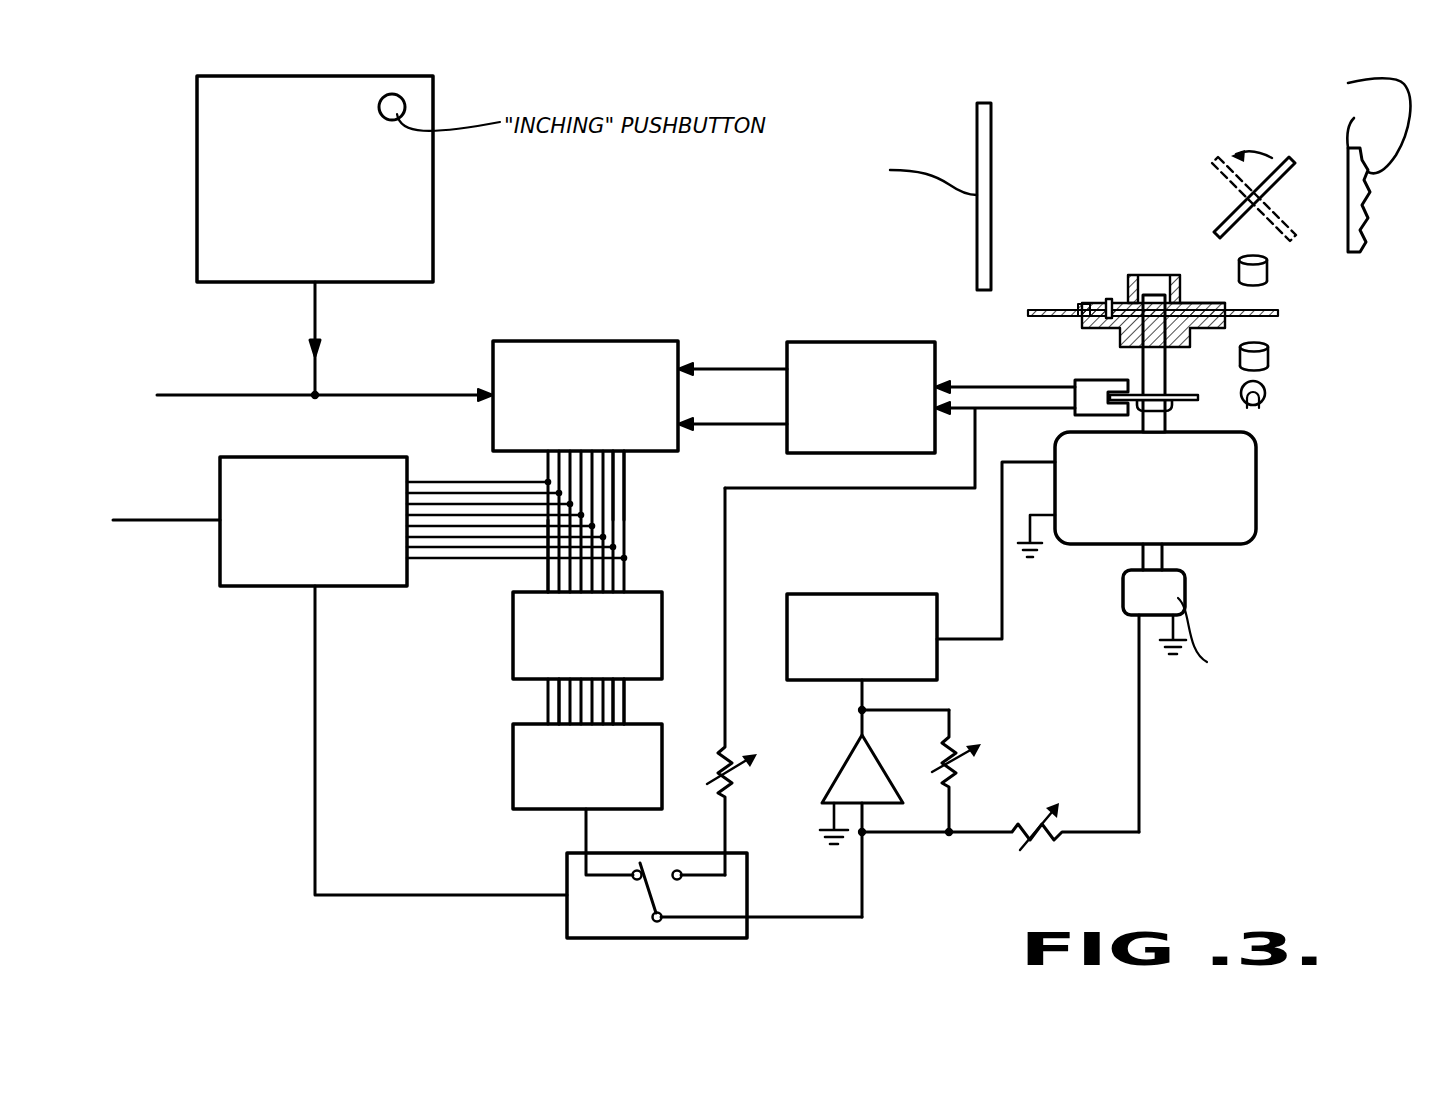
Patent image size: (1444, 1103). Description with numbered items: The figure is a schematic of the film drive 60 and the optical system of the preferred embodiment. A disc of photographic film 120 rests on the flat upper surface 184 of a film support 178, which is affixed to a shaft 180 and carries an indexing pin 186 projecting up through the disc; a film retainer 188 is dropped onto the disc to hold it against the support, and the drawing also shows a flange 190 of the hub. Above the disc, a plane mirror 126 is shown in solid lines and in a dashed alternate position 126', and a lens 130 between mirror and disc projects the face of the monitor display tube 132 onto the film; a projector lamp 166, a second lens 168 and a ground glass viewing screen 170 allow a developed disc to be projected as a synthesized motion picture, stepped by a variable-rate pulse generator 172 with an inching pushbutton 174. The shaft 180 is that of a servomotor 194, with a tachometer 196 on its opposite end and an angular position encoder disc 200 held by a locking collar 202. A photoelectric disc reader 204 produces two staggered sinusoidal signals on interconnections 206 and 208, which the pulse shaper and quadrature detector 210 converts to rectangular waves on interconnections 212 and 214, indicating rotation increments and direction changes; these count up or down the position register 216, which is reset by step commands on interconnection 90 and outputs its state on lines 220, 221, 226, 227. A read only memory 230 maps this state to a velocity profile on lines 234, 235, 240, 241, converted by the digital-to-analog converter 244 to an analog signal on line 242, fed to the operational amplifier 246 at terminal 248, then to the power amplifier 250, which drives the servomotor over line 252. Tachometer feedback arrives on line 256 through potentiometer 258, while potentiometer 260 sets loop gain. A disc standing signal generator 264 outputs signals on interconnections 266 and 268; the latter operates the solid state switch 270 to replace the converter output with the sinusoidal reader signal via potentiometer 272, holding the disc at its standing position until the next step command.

The film drive 60 is at (206, 779).
The step command interconnection 90 is at (250, 393).
The film disc 120 is at (1050, 309).
The plane mirror 126 is at (1230, 197).
The mirror position 126' is at (1224, 187).
The lens 130 is at (1268, 265).
The monitor display tube 132 is at (1241, 163).
The projector lamp 166 is at (1267, 395).
The second lens 168 is at (1270, 357).
The ground glass viewing screen 170 is at (992, 127).
The variable-rate pulse generator 172 is at (433, 185).
The pushbutton 174 is at (403, 104).
The film support 178 is at (1190, 337).
The shaft 180 is at (1146, 368).
The upper surface 184 is at (1077, 318).
The indexing pin 186 is at (1110, 298).
The film retainer 188 is at (1175, 274).
The hub flange 190 is at (1194, 307).
The servomotor 194 is at (1256, 510).
The tachometer 196 is at (1180, 598).
The angular position encoder disc 200 is at (1192, 401).
The locking collar 202 is at (1153, 412).
The photoelectric disc reader 204 is at (1082, 380).
The interconnection 206 is at (1023, 386).
The interconnection 208 is at (1038, 409).
The pulse shaper and quadrature detector 210 is at (878, 342).
The interconnection 212 is at (757, 368).
The interconnection 214 is at (764, 428).
The position register 216 is at (563, 341).
The interconnection line 220 is at (548, 466).
The interconnection line 221 is at (548, 571).
The interconnection line 226 is at (617, 500).
The interconnection line 227 is at (626, 467).
The read only memory 230 is at (513, 634).
The interconnection line 234 is at (548, 688).
The interconnection line 235 is at (557, 703).
The interconnection line 240 is at (617, 707).
The interconnection line 241 is at (624, 690).
The interconnection line 242 is at (586, 828).
The digital-to-analog converter 244 is at (513, 778).
The operational amplifier 246 is at (846, 771).
The power amplifier input line 248 is at (862, 698).
The power amplifier 250 is at (870, 594).
The interconnection line 252 is at (1002, 516).
The interconnection line 256 is at (1139, 730).
The potentiometer 258 is at (1043, 853).
The potentiometer 260 is at (958, 767).
The disc standing signal generator 264 is at (260, 586).
The interconnection 266 is at (175, 518).
The interconnection 268 is at (313, 697).
The solid state switch 270 is at (567, 916).
The potentiometer 272 is at (740, 782).